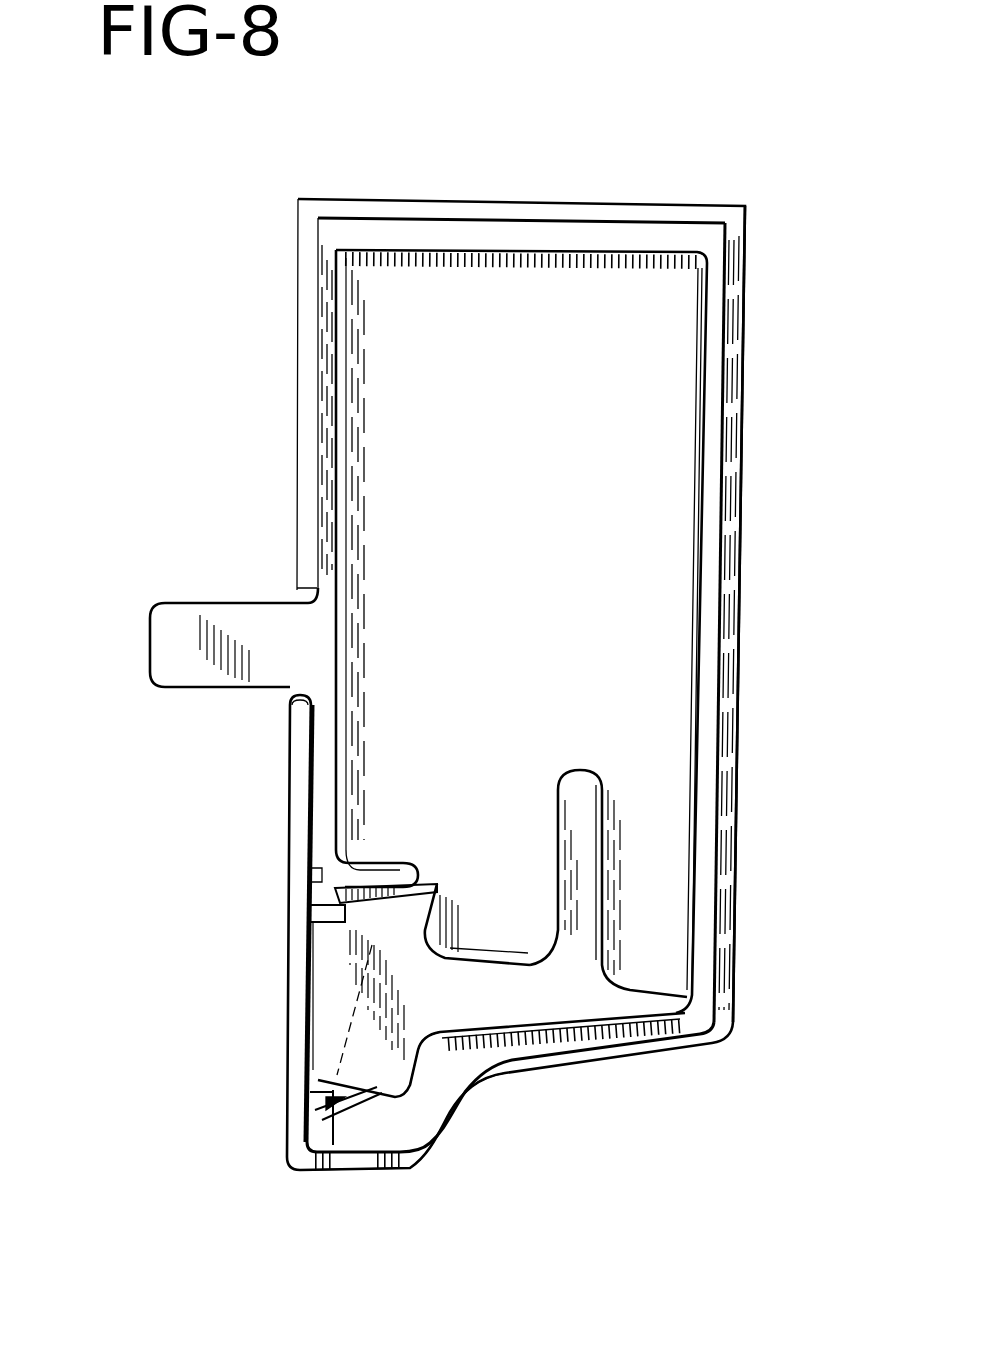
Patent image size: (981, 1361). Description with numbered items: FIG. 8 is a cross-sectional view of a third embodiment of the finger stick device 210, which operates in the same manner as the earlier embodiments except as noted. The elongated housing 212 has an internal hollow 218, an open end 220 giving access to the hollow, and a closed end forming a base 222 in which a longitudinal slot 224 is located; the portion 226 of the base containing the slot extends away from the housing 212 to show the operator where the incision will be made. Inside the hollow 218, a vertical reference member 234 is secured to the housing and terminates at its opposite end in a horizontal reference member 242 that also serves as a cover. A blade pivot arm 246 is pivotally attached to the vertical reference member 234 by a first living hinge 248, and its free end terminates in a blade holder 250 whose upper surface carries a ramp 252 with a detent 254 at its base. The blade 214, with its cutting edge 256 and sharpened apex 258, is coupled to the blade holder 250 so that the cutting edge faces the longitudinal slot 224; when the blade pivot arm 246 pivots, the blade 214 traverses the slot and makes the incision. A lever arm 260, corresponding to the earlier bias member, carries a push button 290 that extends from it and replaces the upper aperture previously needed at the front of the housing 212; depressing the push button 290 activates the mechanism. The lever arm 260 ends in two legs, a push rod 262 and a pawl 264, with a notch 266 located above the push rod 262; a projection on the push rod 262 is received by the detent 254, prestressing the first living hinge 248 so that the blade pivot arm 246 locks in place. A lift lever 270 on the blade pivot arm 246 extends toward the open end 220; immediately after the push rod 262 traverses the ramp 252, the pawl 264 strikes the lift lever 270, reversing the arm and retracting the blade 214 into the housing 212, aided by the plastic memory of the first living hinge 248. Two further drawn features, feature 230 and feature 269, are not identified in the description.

The finger stick device 210 is at (526, 130).
The housing 212 is at (736, 787).
The blade 214 is at (337, 1113).
The internal hollow 218 is at (518, 434).
The open end 220 is at (678, 262).
The base 222 is at (417, 1173).
The longitudinal slot 224 is at (333, 1173).
The portion of the base 226 is at (453, 1130).
The hook lip 230 is at (272, 695).
The vertical reference member 234 is at (712, 605).
The horizontal reference member 242 is at (675, 233).
The blade pivot arm 246 is at (655, 1030).
The first living hinge 248 is at (714, 982).
The blade holder 250 is at (425, 1060).
The ramp 252 is at (428, 882).
The detent 254 is at (307, 933).
The cutting edge 256 is at (355, 1130).
The sharpened apex 258 is at (293, 1148).
The lever arm 260 is at (332, 400).
The push rod 262 is at (313, 900).
The pawl 264 is at (390, 870).
The notch 266 is at (307, 873).
The bench 269 is at (447, 890).
The lift lever 270 is at (584, 790).
The push button 290 is at (180, 642).